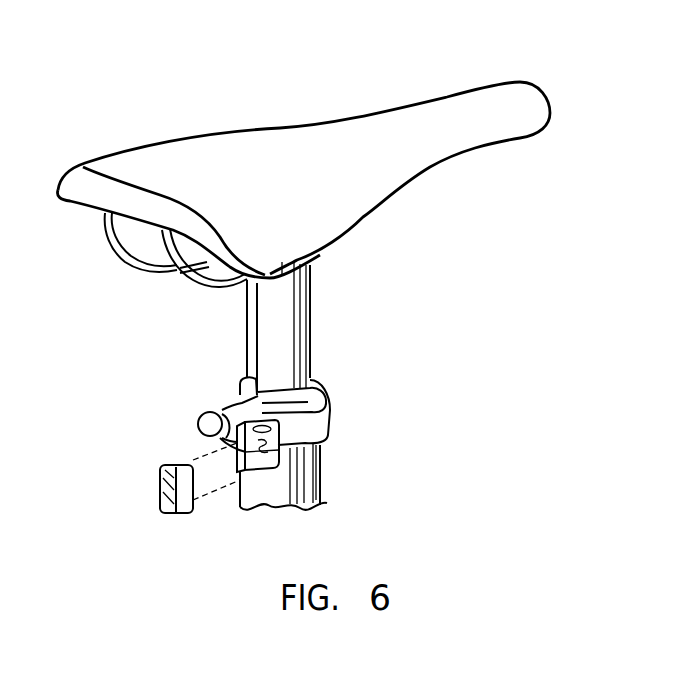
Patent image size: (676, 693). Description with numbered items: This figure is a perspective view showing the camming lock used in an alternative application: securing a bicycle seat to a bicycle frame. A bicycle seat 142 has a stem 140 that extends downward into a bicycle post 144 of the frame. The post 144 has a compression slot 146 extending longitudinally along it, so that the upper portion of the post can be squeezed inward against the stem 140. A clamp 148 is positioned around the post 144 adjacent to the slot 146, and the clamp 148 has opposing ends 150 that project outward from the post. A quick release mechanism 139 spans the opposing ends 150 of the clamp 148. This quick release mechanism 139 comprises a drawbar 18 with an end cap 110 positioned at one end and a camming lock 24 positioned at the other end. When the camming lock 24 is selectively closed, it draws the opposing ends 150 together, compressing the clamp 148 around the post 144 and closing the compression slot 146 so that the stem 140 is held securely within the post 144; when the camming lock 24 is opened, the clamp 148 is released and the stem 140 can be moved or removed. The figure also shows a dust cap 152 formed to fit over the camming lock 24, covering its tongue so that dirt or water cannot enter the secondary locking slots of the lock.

The bicycle seat 142 is at (283, 145).
The stem 140 is at (287, 318).
The compression slot 146 is at (245, 390).
The clamp 148 is at (320, 417).
The end cap 110 is at (200, 422).
The opposing ends 150 is at (210, 437).
The drawbar 18 is at (230, 423).
The camming lock 24 is at (257, 462).
The quick release mechanism 139 is at (273, 457).
The bicycle post 144 is at (323, 470).
The dust cap 152 is at (160, 503).